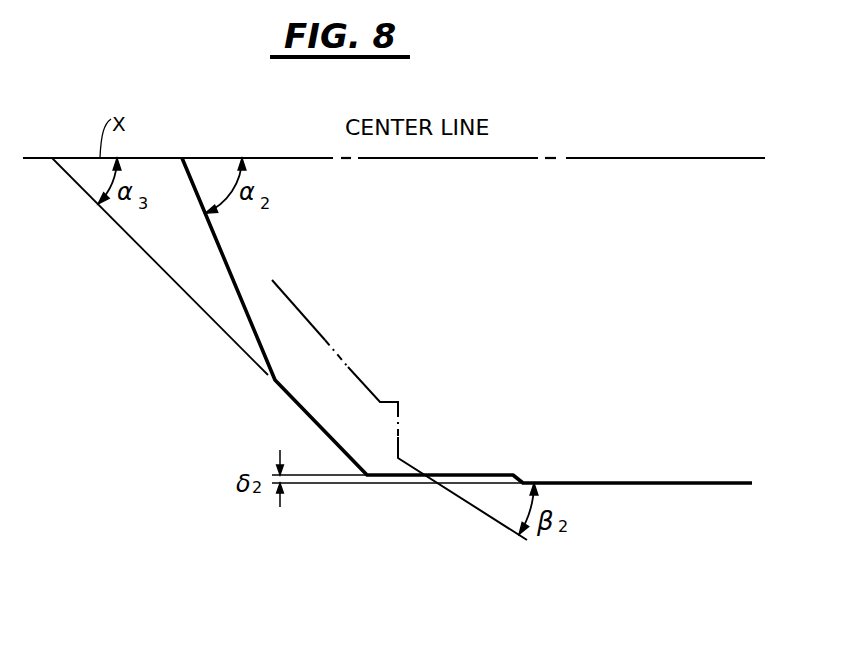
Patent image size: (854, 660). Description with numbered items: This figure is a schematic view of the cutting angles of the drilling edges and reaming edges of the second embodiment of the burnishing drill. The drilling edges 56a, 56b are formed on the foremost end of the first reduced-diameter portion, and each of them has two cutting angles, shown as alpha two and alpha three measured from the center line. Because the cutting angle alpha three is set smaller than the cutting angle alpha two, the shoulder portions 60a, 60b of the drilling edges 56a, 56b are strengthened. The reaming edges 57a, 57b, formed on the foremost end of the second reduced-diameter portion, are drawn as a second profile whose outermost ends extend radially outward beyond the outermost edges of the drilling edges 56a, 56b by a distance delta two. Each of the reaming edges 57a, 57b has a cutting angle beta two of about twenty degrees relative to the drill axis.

The drilling edge 56a is at (253, 332).
The drilling edge 56b is at (416, 320).
The reaming edge 57a is at (405, 470).
The reaming edge 57b is at (399, 415).
The shoulder portion 60a is at (360, 453).
The shoulder portion 60b is at (482, 510).